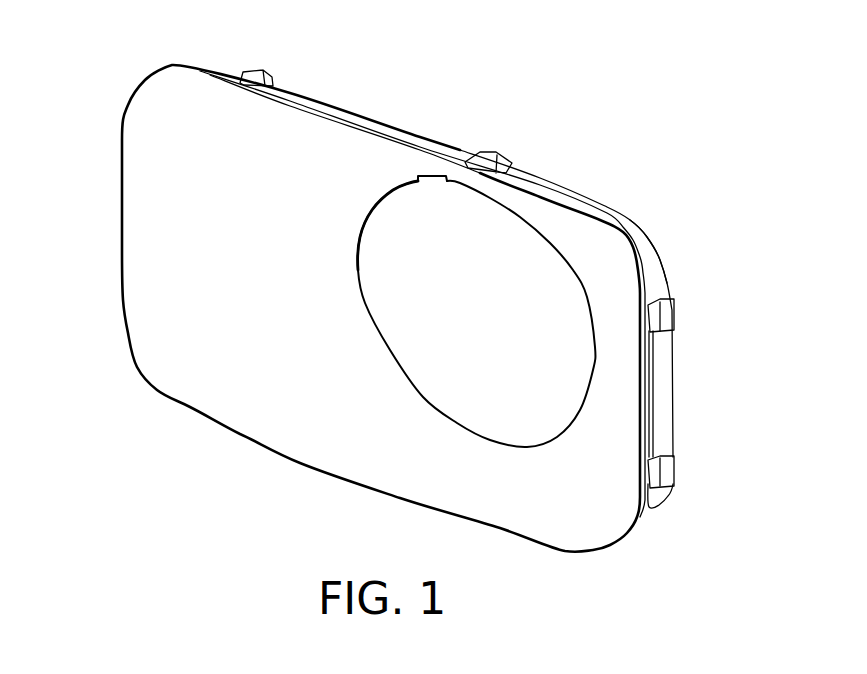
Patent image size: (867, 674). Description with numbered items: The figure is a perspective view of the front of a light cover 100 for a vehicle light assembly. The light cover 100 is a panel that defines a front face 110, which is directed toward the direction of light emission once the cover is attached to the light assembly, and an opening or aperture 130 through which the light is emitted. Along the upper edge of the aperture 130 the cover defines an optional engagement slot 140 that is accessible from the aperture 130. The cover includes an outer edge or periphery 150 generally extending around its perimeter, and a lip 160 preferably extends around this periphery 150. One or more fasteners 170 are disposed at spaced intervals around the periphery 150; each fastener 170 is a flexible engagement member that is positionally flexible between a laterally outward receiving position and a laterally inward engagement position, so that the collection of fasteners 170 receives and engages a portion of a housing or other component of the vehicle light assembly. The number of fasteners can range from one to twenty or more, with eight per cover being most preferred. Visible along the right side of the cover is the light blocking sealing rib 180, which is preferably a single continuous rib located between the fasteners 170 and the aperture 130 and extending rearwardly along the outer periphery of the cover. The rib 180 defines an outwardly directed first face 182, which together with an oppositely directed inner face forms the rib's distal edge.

The light cover 100 is at (686, 113).
The front face 110 is at (143, 137).
The aperture 130 is at (488, 210).
The engagement slot 140 is at (420, 174).
The outer edge 150 is at (633, 248).
The lip 160 is at (352, 118).
The fasteners 170 is at (252, 68).
The light blocking sealing rib 180 is at (617, 216).
The first face 182 is at (656, 273).